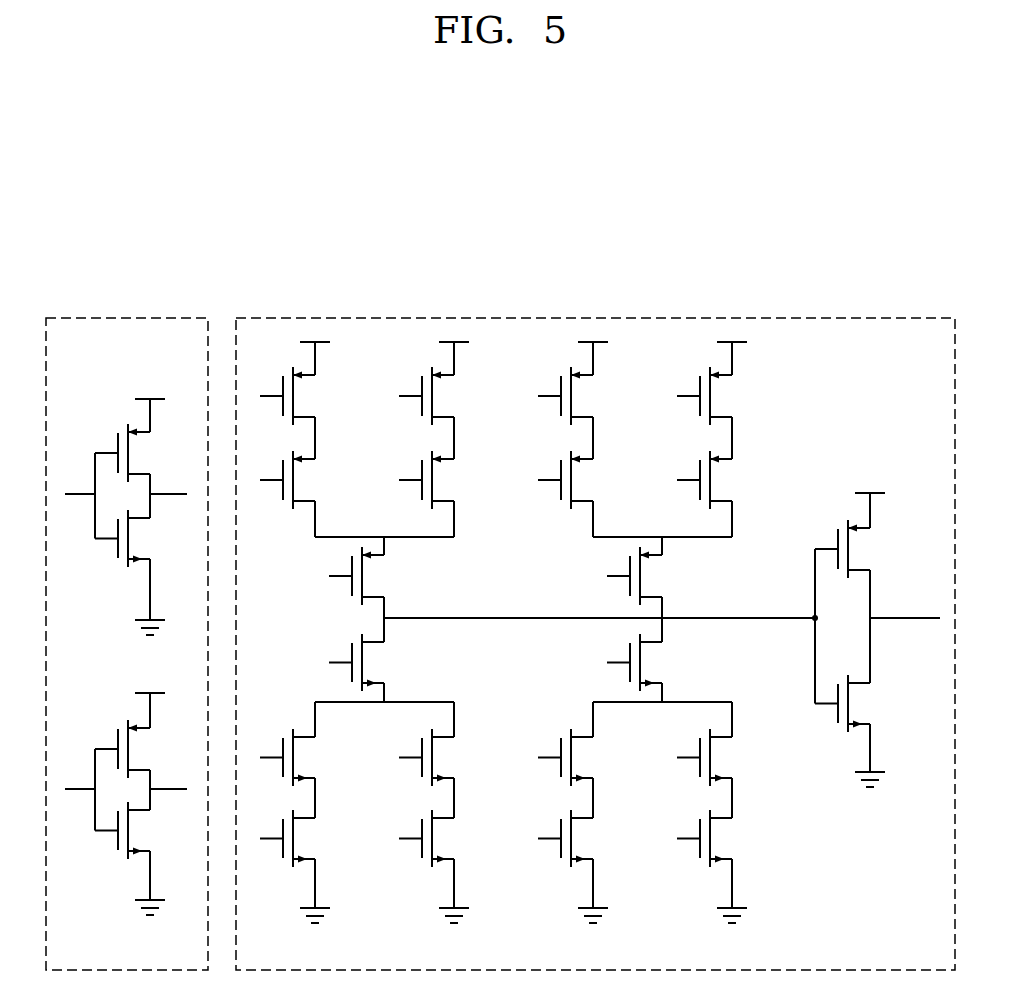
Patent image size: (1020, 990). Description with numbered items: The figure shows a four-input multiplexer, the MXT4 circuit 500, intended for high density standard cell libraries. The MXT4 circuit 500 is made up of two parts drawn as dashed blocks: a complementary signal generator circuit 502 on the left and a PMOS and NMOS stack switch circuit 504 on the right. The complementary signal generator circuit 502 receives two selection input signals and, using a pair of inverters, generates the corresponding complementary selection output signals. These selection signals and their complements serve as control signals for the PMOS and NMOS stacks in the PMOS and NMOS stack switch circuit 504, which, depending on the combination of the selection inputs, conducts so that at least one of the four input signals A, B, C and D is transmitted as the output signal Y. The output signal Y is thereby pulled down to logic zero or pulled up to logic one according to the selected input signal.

The MXT4 circuit 500 is at (500, 257).
The complementary signal generator circuit 502 is at (143, 361).
The PMOS and NMOS stack switch circuit 504 is at (865, 364).